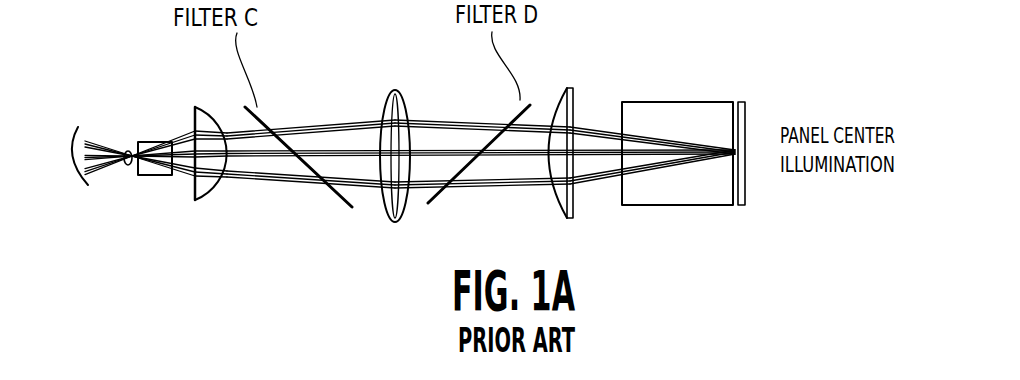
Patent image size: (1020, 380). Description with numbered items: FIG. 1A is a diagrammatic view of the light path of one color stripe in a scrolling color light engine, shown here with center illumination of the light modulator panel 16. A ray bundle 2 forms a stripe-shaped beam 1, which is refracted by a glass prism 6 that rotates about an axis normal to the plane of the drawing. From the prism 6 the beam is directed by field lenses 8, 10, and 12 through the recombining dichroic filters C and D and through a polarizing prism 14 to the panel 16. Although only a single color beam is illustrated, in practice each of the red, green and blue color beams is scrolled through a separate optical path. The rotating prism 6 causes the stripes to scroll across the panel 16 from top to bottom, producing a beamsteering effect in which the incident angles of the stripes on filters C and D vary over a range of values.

The stripe-shaped beam 1 is at (133, 139).
The ray bundle 2 is at (100, 138).
The glass prism 6 is at (152, 175).
The field lens 8 is at (208, 197).
The field lens 10 is at (400, 213).
The field lens 12 is at (577, 220).
The polarizing prism 14 is at (680, 197).
The panel 16 is at (747, 198).